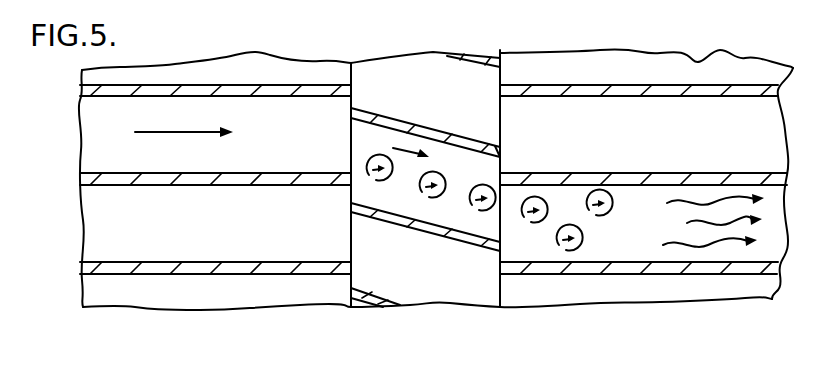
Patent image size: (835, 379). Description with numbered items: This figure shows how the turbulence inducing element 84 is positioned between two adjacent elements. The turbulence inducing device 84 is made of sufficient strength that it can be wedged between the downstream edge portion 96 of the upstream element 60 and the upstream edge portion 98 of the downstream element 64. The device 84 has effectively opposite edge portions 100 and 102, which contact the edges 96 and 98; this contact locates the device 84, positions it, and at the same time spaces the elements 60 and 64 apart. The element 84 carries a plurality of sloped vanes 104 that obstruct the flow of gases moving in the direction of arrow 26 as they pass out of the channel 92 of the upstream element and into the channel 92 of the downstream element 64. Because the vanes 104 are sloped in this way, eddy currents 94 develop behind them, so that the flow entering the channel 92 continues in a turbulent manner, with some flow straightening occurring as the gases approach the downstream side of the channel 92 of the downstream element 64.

The arrow 26 is at (181, 120).
The element 60 is at (205, 312).
The downstream element 64 is at (608, 303).
The turbulence inducing element 84 is at (430, 303).
The channel 92 is at (253, 173).
The eddy currents 94 is at (560, 187).
The downstream edge portion 96 is at (352, 72).
The upstream edge portion 98 is at (493, 86).
The edge portion 100 is at (349, 209).
The edge portion 102 is at (503, 152).
The sloped vanes 104 is at (438, 124).